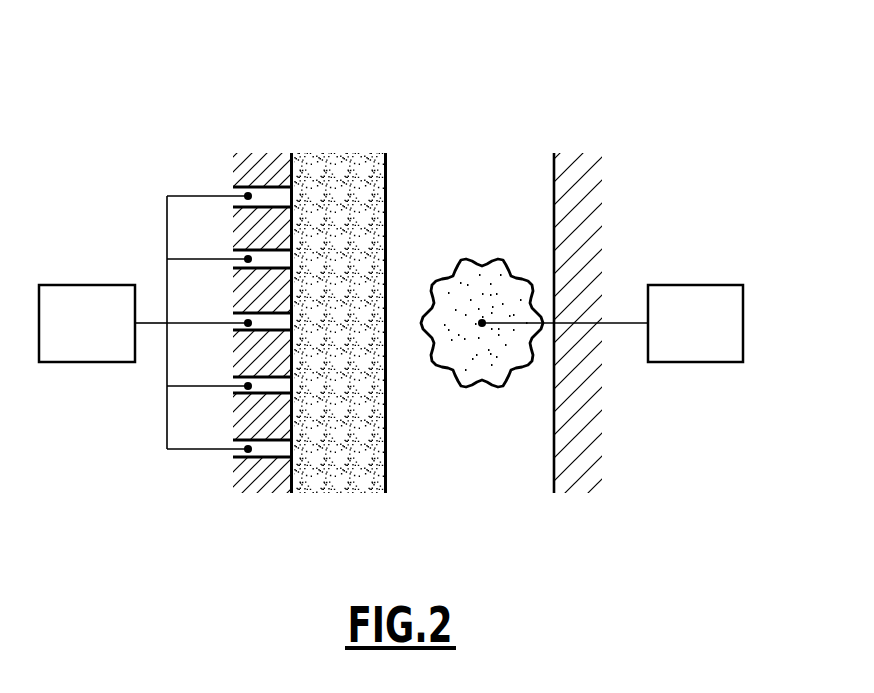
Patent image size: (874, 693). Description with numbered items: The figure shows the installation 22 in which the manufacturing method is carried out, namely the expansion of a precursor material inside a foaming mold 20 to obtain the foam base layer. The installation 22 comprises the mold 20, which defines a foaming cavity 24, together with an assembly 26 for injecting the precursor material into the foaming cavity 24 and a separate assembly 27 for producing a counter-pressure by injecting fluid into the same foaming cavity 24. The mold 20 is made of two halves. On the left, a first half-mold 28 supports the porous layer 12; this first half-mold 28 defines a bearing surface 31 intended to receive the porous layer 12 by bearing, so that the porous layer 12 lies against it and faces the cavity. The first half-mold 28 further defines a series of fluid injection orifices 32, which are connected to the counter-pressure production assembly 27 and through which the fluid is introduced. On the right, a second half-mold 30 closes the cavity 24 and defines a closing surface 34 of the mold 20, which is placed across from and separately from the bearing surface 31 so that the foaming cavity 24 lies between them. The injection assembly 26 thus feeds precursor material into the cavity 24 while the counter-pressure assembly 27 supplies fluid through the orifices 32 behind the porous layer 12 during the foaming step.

The porous layer 12 is at (368, 432).
The mold 20 is at (570, 108).
The installation 22 is at (228, 122).
The foaming cavity 24 is at (534, 290).
The assembly for injecting the precursor material 26 is at (688, 270).
The assembly for producing a counter-pressure 27 is at (78, 268).
The first half-mold 28 is at (283, 148).
The second half-mold 30 is at (597, 138).
The bearing surface 31 is at (293, 215).
The fluid injection orifices 32 is at (270, 260).
The closing surface 34 is at (553, 467).